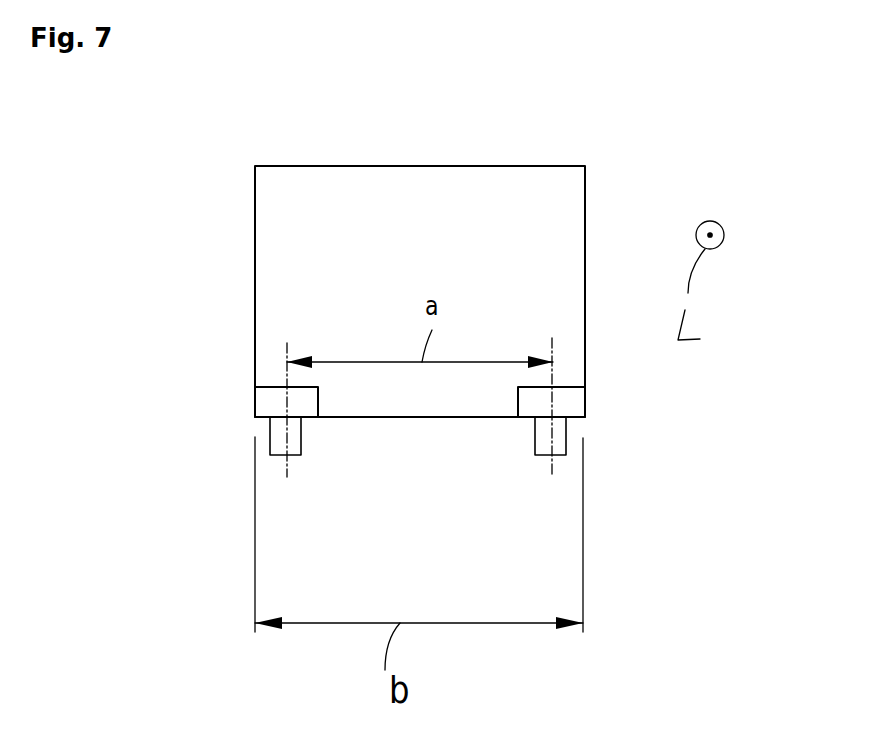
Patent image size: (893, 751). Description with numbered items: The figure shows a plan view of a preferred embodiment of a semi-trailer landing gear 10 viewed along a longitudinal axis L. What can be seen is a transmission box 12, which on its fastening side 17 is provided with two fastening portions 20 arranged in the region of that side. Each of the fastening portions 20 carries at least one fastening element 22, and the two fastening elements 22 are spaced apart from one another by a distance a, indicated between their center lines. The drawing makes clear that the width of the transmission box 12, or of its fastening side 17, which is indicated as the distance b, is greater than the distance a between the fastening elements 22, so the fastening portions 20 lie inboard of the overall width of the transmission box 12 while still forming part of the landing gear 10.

The semi-trailer landing gear 10 is at (648, 171).
The transmission box 12 is at (447, 177).
The fastening side 17 is at (392, 460).
The fastening portion 20 is at (228, 449).
The fastening element 22 is at (280, 455).